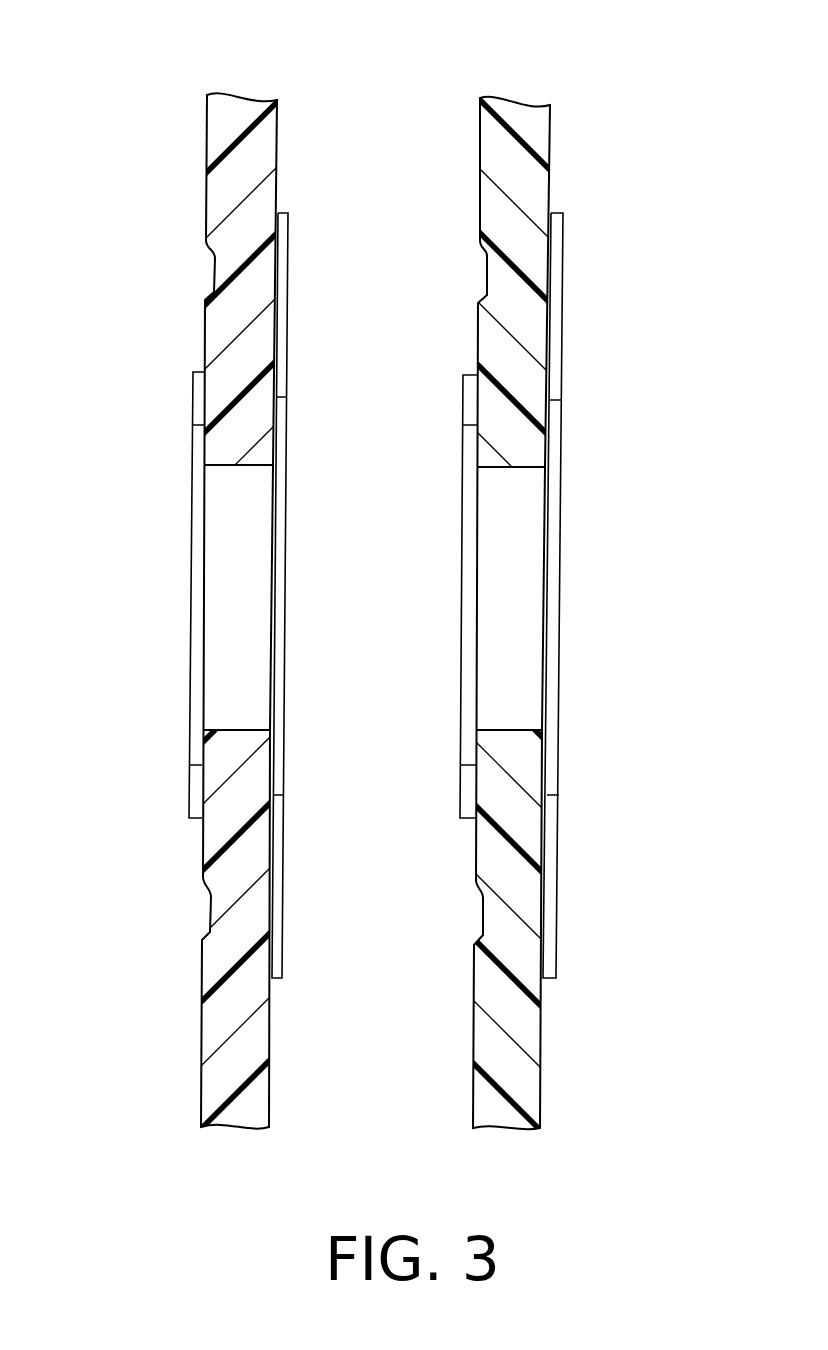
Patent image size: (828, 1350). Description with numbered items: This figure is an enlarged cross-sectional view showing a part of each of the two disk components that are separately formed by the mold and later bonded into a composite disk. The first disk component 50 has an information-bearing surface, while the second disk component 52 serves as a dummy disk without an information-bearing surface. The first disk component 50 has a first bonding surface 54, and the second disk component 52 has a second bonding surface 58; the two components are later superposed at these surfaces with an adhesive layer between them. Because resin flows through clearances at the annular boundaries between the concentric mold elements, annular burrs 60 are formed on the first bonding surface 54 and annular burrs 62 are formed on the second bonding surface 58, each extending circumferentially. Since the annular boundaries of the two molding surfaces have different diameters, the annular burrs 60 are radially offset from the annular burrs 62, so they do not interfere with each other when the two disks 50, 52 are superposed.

The first disk component 50 is at (525, 93).
The second disk component 52 is at (267, 88).
The first bonding surface 54 is at (473, 1042).
The second bonding surface 58 is at (269, 1090).
The annular burrs 60 is at (570, 215).
The annular burrs 62 is at (295, 210).